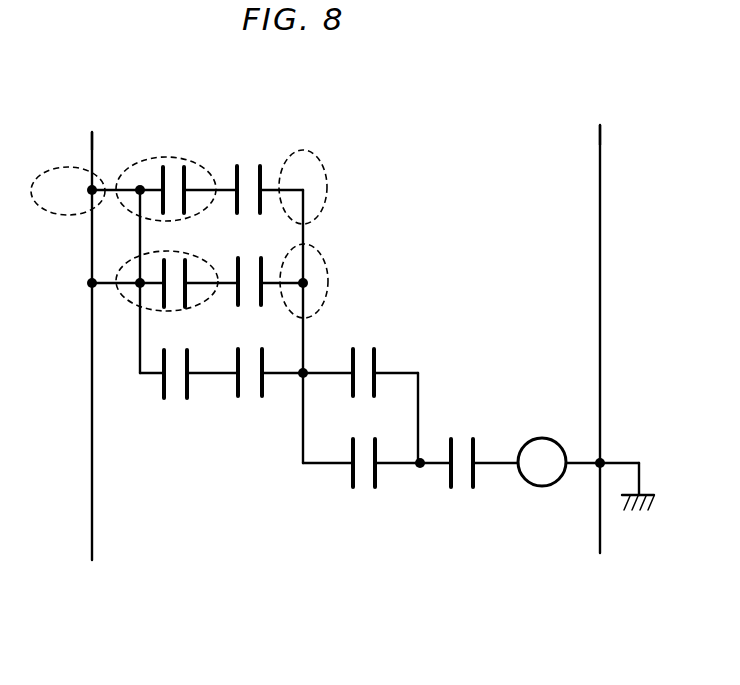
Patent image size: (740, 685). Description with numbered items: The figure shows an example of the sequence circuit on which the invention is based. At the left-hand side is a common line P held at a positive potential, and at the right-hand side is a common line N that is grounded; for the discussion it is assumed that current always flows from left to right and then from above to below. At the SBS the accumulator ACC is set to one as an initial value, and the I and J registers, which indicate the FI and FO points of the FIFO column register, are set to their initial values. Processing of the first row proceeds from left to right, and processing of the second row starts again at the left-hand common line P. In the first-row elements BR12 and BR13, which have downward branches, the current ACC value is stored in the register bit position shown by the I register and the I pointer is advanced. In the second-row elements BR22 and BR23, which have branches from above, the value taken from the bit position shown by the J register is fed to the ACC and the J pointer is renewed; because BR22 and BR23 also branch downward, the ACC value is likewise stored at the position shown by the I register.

The common line P is at (89, 129).
The common line N is at (599, 123).
The element SBS is at (68, 191).
The element having a downward branch BR12 is at (166, 157).
The element having a downward branch BR13 is at (315, 152).
The element having branches from above BR22 is at (167, 311).
The element having branches from above BR23 is at (326, 270).